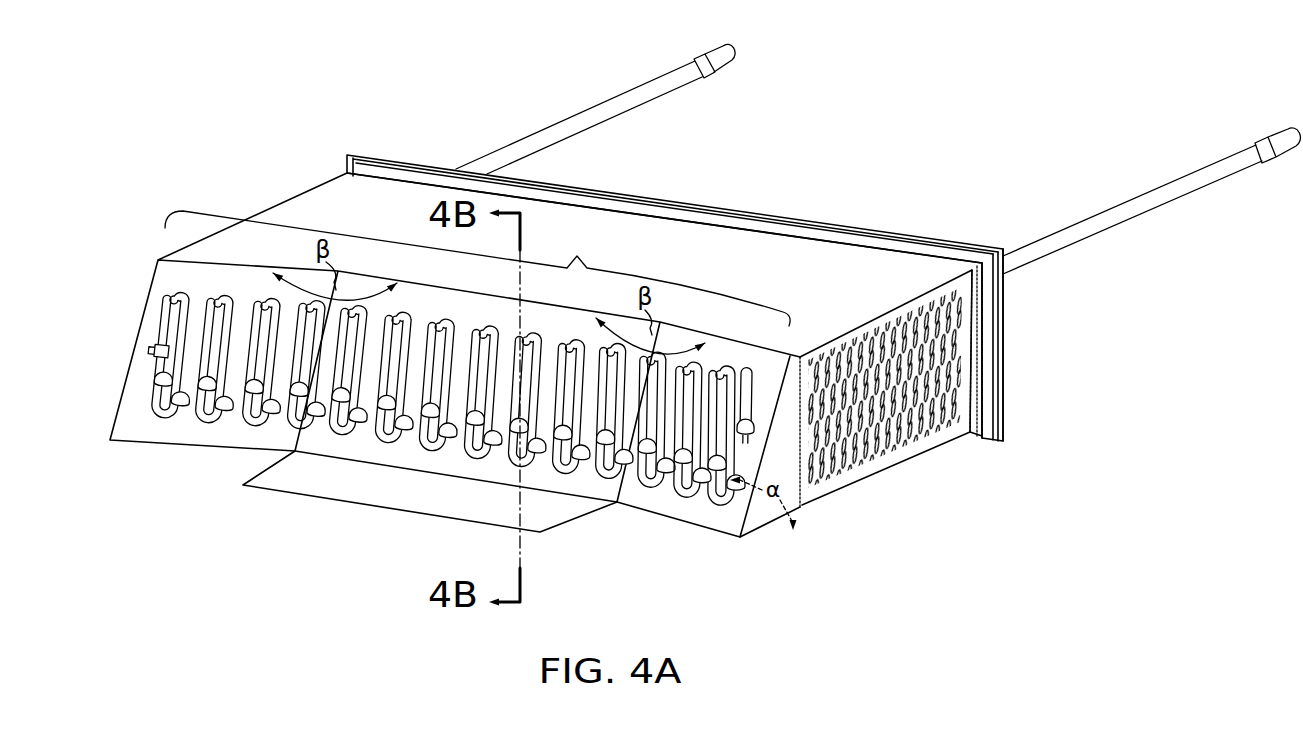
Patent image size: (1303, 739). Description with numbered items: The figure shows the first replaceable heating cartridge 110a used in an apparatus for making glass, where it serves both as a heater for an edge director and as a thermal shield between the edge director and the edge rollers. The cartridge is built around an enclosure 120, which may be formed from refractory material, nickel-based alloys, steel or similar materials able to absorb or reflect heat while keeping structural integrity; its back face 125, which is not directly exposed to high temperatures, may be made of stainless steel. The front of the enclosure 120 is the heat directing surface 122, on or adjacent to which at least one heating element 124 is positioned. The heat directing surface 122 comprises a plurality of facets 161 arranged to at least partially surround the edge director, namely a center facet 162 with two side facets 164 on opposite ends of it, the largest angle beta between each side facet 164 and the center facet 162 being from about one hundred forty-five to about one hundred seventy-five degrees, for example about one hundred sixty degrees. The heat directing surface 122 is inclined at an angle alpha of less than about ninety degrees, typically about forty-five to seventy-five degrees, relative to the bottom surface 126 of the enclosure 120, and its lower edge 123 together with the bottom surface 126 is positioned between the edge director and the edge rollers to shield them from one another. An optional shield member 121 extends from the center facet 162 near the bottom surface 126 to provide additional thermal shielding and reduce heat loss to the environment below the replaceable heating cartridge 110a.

The first replaceable heating cartridge 110a is at (439, 469).
The enclosure 120 is at (886, 509).
The shield member 121 is at (548, 515).
The heat directing surface 122 is at (190, 436).
The lower edge 123 is at (339, 463).
The heating element 124 is at (468, 468).
The back face 125 is at (1029, 354).
The bottom surface 126 is at (776, 526).
The facets 161 is at (477, 268).
The center facet 162 is at (387, 463).
The side facets 164 is at (235, 448).